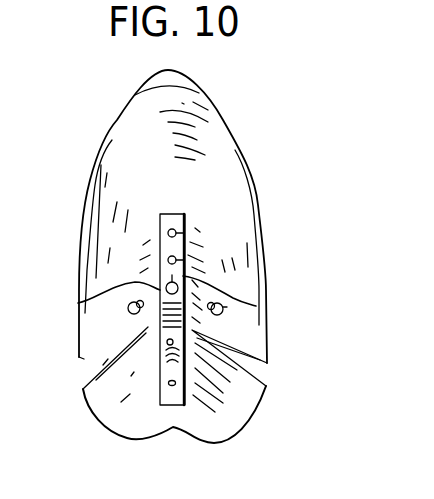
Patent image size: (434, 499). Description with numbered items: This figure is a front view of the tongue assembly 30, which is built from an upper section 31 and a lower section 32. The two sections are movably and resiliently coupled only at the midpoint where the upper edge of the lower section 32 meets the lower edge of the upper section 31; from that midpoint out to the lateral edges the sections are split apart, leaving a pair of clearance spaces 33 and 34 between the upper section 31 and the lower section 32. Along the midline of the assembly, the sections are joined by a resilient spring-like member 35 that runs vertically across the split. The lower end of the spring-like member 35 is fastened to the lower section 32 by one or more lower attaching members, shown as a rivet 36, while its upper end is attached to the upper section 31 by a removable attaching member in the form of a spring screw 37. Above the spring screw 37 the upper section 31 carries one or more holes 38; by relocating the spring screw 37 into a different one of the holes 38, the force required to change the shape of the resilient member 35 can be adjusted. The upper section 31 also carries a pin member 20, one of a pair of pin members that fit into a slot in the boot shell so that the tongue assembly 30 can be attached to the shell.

The tongue assembly 30 is at (252, 143).
The upper section 31 is at (199, 197).
The holes 38 is at (186, 253).
The pin member 20 is at (250, 296).
The spring screw 37 is at (78, 303).
The resilient spring-like member 35 is at (233, 303).
The clearance space 34 is at (100, 352).
The clearance space 33 is at (252, 355).
The rivet 36 is at (158, 343).
The lower section 32 is at (120, 418).